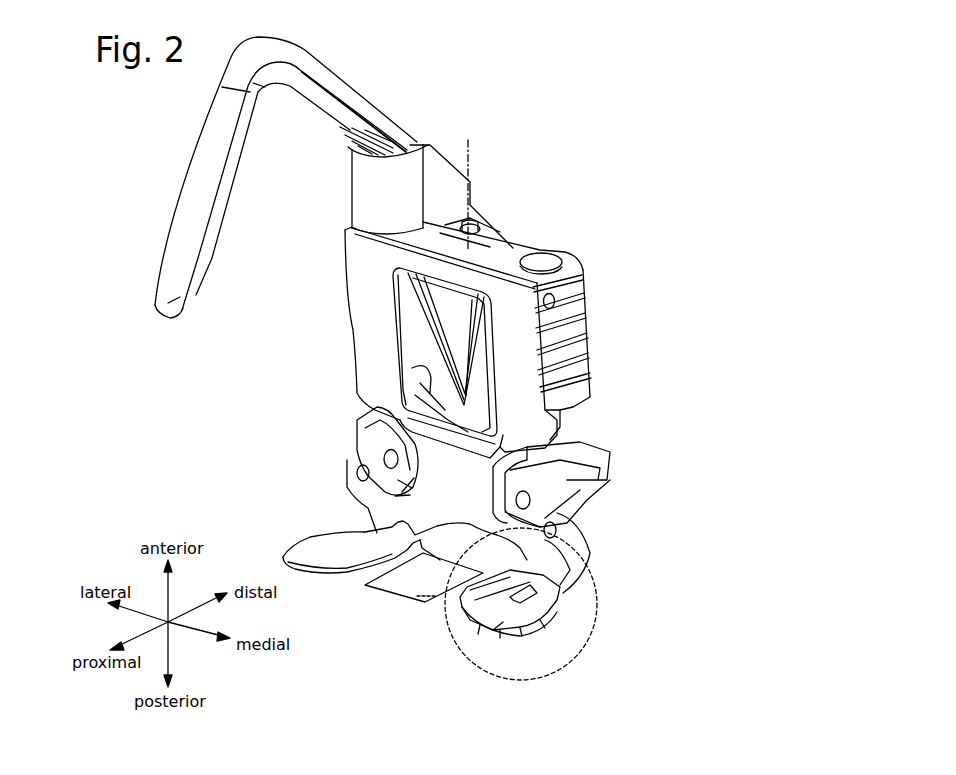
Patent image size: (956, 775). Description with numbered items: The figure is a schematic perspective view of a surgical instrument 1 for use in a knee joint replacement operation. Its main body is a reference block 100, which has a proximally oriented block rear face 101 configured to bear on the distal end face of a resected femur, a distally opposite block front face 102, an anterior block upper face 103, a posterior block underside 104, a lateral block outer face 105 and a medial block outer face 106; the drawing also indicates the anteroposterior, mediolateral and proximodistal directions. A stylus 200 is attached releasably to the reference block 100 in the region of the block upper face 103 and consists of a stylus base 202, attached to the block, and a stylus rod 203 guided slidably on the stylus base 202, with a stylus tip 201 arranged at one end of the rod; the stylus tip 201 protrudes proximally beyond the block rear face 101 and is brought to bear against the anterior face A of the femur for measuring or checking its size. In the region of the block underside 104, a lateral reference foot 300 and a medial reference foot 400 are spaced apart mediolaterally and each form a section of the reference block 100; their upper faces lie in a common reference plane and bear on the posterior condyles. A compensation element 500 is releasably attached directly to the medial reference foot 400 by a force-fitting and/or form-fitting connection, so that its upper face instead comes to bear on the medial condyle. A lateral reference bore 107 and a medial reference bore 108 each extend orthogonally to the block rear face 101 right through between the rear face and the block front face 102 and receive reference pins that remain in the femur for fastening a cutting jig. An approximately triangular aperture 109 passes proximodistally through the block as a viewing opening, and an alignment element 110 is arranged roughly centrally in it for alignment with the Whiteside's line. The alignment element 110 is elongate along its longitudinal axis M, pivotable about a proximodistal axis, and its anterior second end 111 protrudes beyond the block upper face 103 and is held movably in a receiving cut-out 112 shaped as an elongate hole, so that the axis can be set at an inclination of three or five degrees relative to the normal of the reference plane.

The surgical instrument 1 is at (576, 122).
The reference block 100 is at (462, 390).
The block rear face 101 is at (363, 298).
The block front face 102 is at (593, 358).
The block upper face 103 is at (513, 263).
The block underside 104 is at (587, 567).
The lateral block outer face 105 is at (350, 280).
The medial block outer face 106 is at (578, 392).
The lateral reference bore 107 is at (353, 440).
The medial reference bore 108 is at (587, 483).
The aperture 109 is at (458, 312).
The alignment element 110 is at (447, 333).
The second end 111 is at (474, 227).
The receiving cut-out 112 is at (452, 213).
The stylus 200 is at (330, 216).
The stylus tip 201 is at (173, 315).
The stylus base 202 is at (427, 223).
The stylus rod 203 is at (252, 125).
The lateral reference foot 300 is at (286, 527).
The medial reference foot 400 is at (621, 556).
The compensation element 500 is at (500, 627).
The longitudinal axis M is at (470, 150).
The anterior face A is at (600, 555).